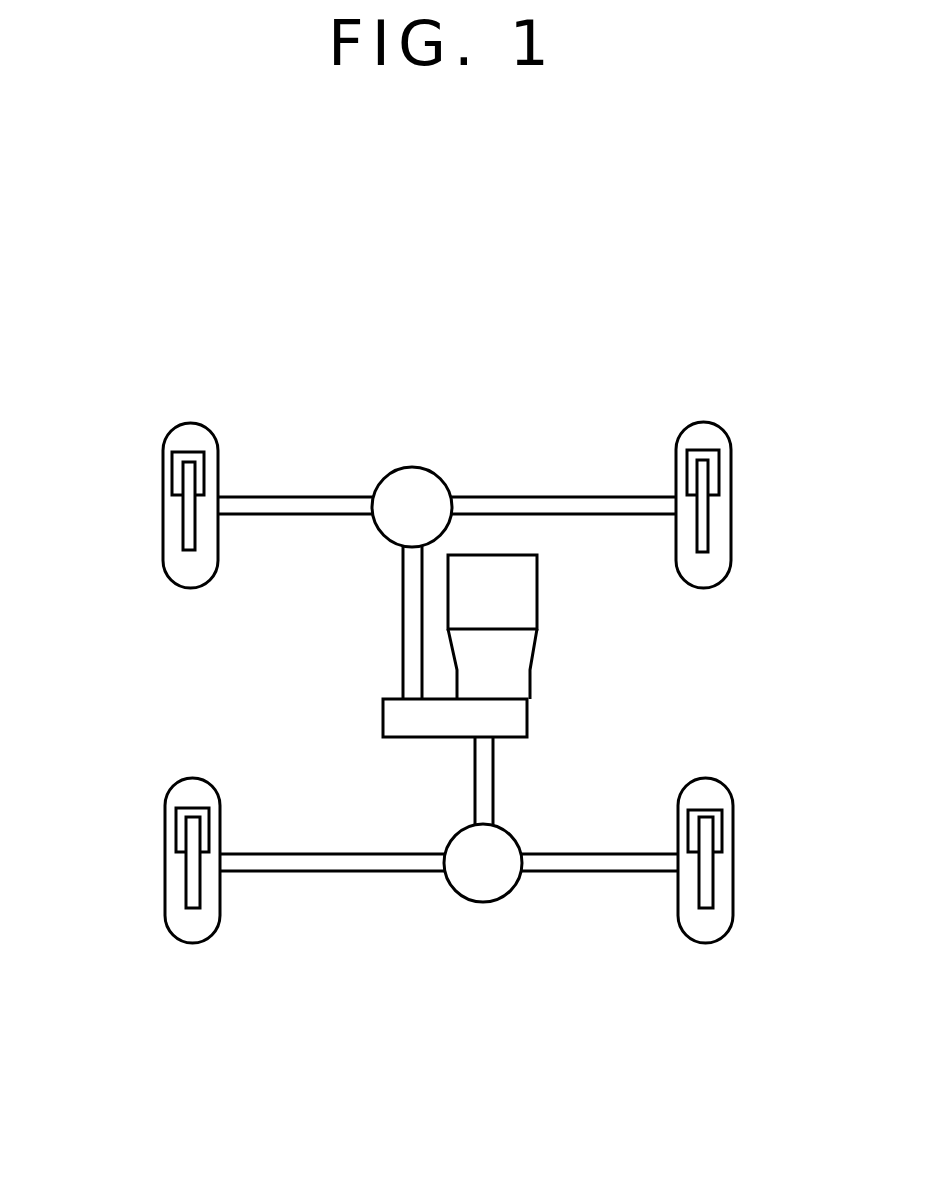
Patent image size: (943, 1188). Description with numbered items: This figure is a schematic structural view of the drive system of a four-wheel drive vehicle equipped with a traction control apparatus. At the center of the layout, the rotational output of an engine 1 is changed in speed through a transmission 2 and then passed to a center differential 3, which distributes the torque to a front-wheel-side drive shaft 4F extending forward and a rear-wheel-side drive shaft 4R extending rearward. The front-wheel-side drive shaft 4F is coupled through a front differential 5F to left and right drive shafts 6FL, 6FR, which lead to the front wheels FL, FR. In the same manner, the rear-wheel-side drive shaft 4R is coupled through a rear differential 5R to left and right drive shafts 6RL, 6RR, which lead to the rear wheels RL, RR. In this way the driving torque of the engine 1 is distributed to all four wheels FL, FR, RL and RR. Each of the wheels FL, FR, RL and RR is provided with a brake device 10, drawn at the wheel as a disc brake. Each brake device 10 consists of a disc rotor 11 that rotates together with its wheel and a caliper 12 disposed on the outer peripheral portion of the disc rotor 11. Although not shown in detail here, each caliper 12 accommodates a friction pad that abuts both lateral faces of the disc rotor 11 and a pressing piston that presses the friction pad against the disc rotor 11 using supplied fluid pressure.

The engine 1 is at (538, 602).
The transmission 2 is at (531, 650).
The center differential 3 is at (527, 715).
The front-wheel-side drive shaft 4F is at (403, 612).
The rear-wheel-side drive shaft 4R is at (494, 778).
The front differential 5F is at (410, 467).
The rear differential 5R is at (473, 902).
The left drive shaft 6FL is at (288, 497).
The right drive shaft 6FR is at (540, 497).
The left drive shaft 6RL is at (320, 874).
The right drive shaft 6RR is at (637, 874).
The brake device 10 is at (455, 680).
The disc rotor 11 is at (183, 540).
The caliper 12 is at (172, 472).
The front left wheel FL is at (188, 423).
The front right wheel FR is at (702, 422).
The rear left wheel RL is at (192, 943).
The rear right wheel RR is at (700, 943).